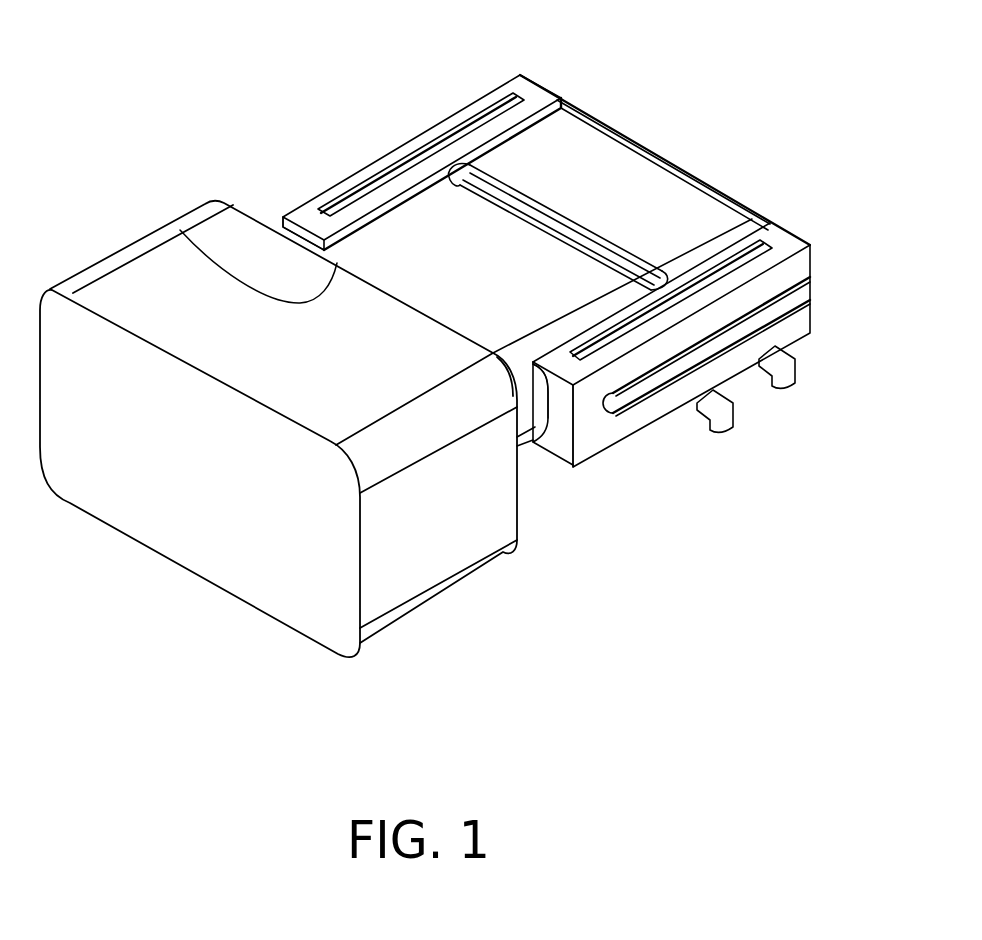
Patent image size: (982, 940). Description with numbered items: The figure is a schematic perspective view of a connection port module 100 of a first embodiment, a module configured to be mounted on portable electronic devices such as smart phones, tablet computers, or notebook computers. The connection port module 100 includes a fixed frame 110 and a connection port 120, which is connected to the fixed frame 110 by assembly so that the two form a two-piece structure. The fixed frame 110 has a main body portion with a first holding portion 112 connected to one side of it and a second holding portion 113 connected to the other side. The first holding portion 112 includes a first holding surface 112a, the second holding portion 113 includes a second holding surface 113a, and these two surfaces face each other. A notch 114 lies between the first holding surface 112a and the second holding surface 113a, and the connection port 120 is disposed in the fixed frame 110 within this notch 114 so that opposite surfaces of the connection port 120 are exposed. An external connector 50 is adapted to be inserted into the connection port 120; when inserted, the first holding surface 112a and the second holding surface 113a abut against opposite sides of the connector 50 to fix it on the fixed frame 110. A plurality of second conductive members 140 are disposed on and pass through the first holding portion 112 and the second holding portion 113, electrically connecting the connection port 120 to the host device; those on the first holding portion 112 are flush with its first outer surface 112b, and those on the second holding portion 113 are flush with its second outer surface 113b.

The connection port module 100 is at (436, 333).
The fixed frame 110 is at (431, 333).
The first holding portion 112 is at (432, 135).
The first holding surface 112a is at (190, 236).
The first outer surface 112b is at (274, 220).
The second holding portion 113 is at (675, 372).
The second holding surface 113a is at (535, 400).
The second outer surface 113b is at (603, 431).
The notch 114 is at (522, 455).
The connection port 120 is at (680, 143).
The second conductive members 140 is at (727, 340).
The connector 50 is at (437, 243).